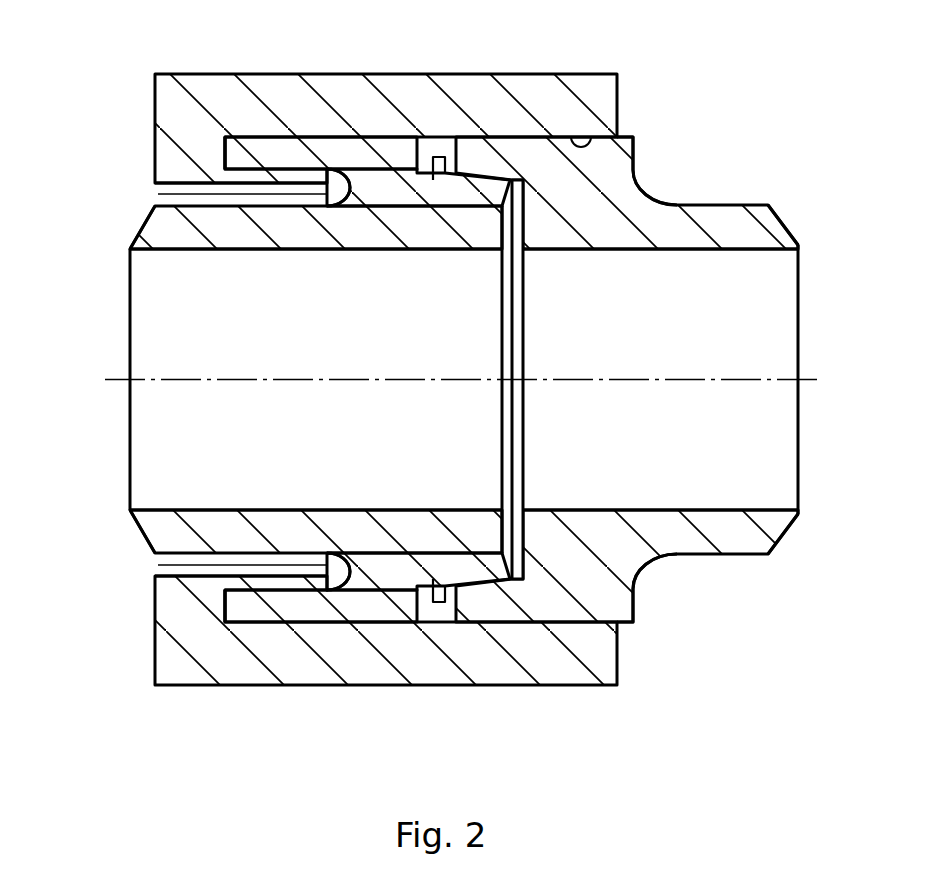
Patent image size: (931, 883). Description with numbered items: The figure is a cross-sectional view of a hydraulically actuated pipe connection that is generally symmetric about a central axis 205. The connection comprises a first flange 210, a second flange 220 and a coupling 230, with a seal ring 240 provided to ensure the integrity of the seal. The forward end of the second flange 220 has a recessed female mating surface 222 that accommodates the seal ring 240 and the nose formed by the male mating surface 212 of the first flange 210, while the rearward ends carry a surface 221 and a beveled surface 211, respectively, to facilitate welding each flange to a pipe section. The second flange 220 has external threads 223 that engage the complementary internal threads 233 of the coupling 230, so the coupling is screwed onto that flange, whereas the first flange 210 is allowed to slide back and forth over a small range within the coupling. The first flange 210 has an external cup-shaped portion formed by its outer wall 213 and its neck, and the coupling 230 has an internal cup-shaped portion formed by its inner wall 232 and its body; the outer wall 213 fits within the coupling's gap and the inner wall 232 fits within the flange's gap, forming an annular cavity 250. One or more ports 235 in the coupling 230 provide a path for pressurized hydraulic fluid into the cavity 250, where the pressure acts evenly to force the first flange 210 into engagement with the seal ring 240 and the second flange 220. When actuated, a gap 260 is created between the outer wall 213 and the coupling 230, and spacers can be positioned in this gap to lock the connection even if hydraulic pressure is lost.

The axis 205 is at (122, 381).
The first flange 210 is at (172, 252).
The beveled surface 211 is at (143, 236).
The male mating surface 212 is at (418, 586).
The outer wall 213 is at (267, 148).
The second flange 220 is at (707, 204).
The surface 221 is at (786, 226).
The female mating surface 222 is at (520, 580).
The external threads 223 is at (626, 142).
The coupling 230 is at (162, 76).
The inner wall 232 is at (278, 578).
The internal threads 233 is at (601, 137).
The ports 235 is at (160, 189).
The seal ring 240 is at (440, 157).
The cavity 250 is at (338, 168).
The gap 260 is at (213, 149).